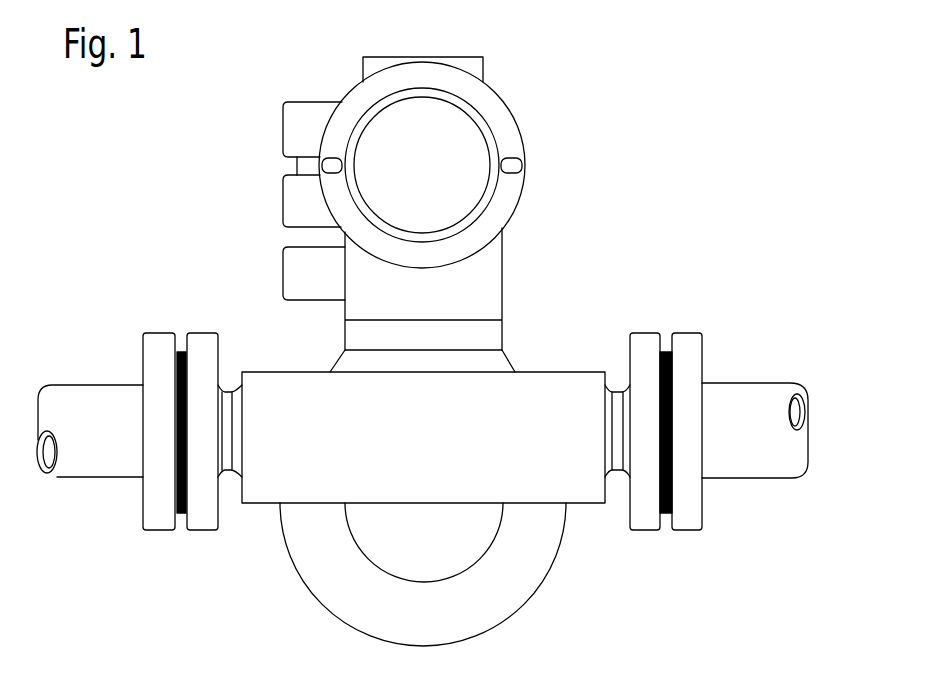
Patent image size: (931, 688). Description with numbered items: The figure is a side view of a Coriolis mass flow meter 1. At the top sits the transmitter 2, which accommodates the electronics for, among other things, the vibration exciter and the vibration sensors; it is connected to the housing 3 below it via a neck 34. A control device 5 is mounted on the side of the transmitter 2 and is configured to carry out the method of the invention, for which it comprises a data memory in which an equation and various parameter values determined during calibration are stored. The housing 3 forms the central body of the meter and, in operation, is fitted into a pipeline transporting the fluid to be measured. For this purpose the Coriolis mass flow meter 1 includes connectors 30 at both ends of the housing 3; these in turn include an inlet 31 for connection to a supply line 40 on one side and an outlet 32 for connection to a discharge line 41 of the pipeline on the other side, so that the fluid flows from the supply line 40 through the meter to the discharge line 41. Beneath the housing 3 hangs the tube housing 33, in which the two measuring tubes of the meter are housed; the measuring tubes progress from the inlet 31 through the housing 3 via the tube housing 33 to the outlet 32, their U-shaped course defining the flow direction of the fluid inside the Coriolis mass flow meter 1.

The Coriolis mass flow meter 1 is at (560, 142).
The transmitter 2 is at (403, 153).
The housing 3 is at (292, 390).
The control device 5 is at (303, 130).
The connectors 30 is at (614, 384).
The inlet 31 is at (205, 357).
The outlet 32 is at (642, 357).
The tube housing 33 is at (528, 550).
The neck 34 is at (457, 337).
The supply line 40 is at (98, 407).
The discharge line 41 is at (742, 410).